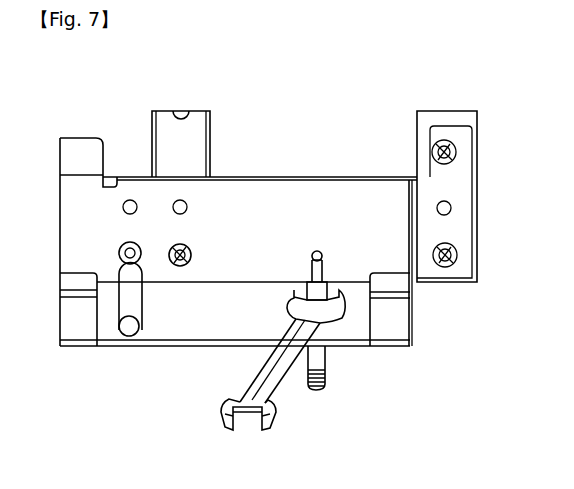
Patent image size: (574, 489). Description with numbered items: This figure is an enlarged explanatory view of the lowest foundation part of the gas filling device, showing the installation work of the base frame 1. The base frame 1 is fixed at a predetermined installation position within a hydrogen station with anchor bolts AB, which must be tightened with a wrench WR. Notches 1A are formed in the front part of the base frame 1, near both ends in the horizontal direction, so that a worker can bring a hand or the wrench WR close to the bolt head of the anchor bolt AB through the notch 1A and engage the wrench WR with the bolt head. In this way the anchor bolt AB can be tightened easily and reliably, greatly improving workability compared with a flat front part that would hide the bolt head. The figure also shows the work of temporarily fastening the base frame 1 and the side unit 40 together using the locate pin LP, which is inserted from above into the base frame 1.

The base frame 1 is at (415, 310).
The notch 1A is at (98, 322).
The side unit 40 is at (213, 134).
The locate pin LP is at (140, 318).
The anchor bolt AB is at (327, 368).
The wrench WR is at (270, 420).